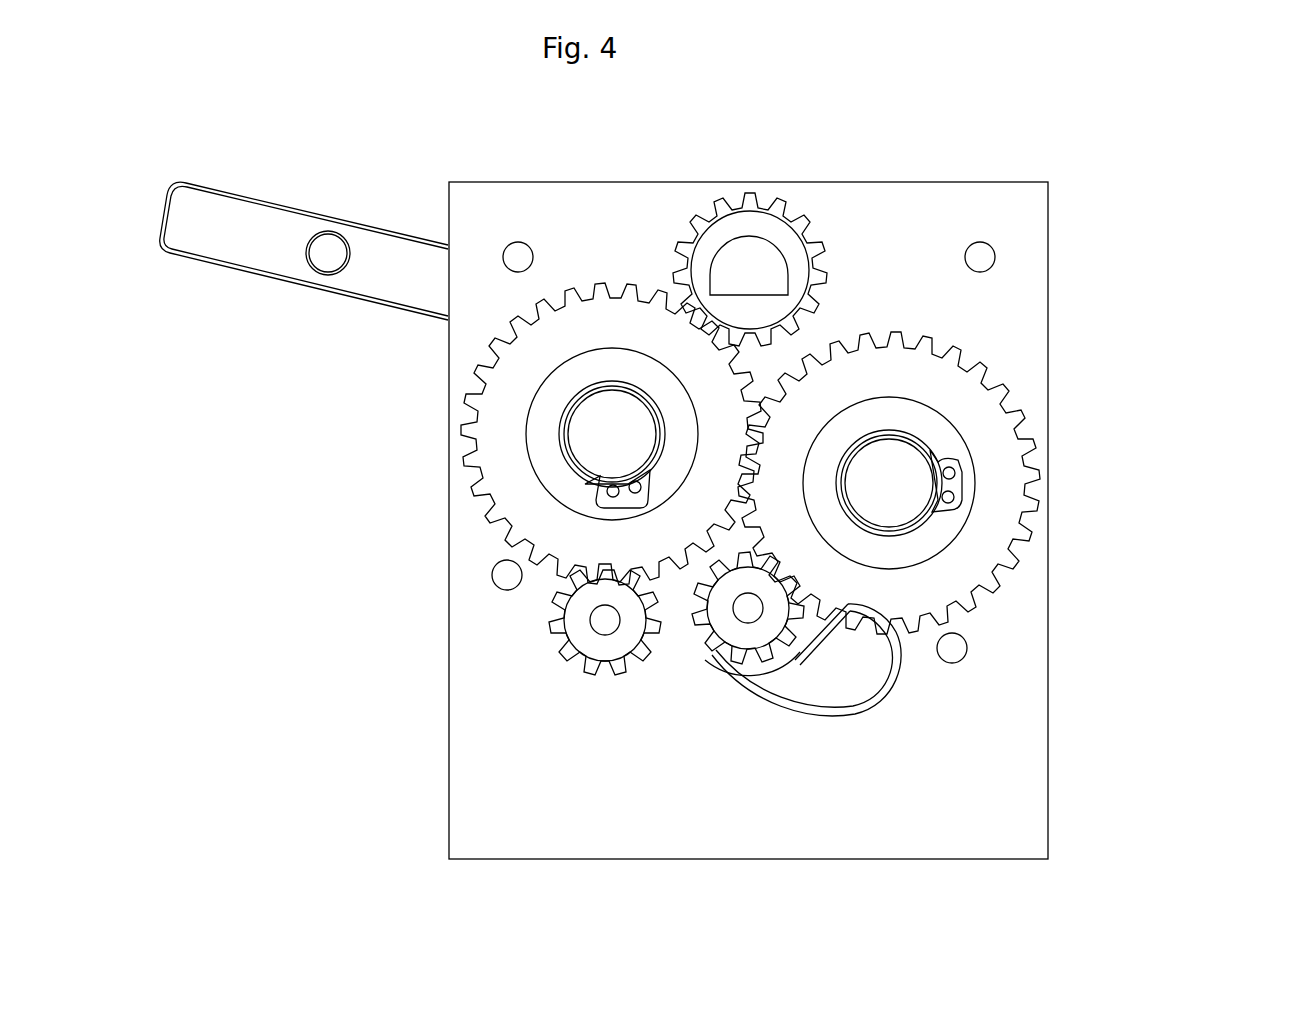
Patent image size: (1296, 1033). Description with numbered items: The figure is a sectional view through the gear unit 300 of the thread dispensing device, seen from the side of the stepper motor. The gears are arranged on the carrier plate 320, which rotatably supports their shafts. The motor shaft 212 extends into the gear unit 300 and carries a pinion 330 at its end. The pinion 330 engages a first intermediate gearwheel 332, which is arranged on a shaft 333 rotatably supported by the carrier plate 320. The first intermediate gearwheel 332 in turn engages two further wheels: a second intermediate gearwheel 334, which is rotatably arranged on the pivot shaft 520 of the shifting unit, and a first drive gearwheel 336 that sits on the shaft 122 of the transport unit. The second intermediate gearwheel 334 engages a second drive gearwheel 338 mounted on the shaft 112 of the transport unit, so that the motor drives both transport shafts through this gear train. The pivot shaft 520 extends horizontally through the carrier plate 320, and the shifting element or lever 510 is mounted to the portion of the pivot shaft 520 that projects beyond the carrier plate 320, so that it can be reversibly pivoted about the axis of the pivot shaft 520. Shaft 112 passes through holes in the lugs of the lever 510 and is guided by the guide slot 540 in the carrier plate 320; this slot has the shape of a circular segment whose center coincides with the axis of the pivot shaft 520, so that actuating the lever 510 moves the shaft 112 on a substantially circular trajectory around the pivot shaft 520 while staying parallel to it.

The gear unit 300 is at (1192, 164).
The carrier plate 320 is at (935, 222).
The shifting element or lever 510 is at (225, 230).
The first intermediate gearwheel 332 is at (590, 315).
The shaft 333 is at (590, 443).
The second intermediate gearwheel 334 is at (985, 518).
The pivot shaft 520 is at (893, 487).
The pinion 330 is at (715, 208).
The shaft 212 is at (750, 262).
The first drive gearwheel 336 is at (584, 608).
The shaft 122 is at (604, 622).
The second drive gearwheel 338 is at (705, 630).
The shaft 112 is at (748, 618).
The guide means or guide slot 540 is at (830, 712).